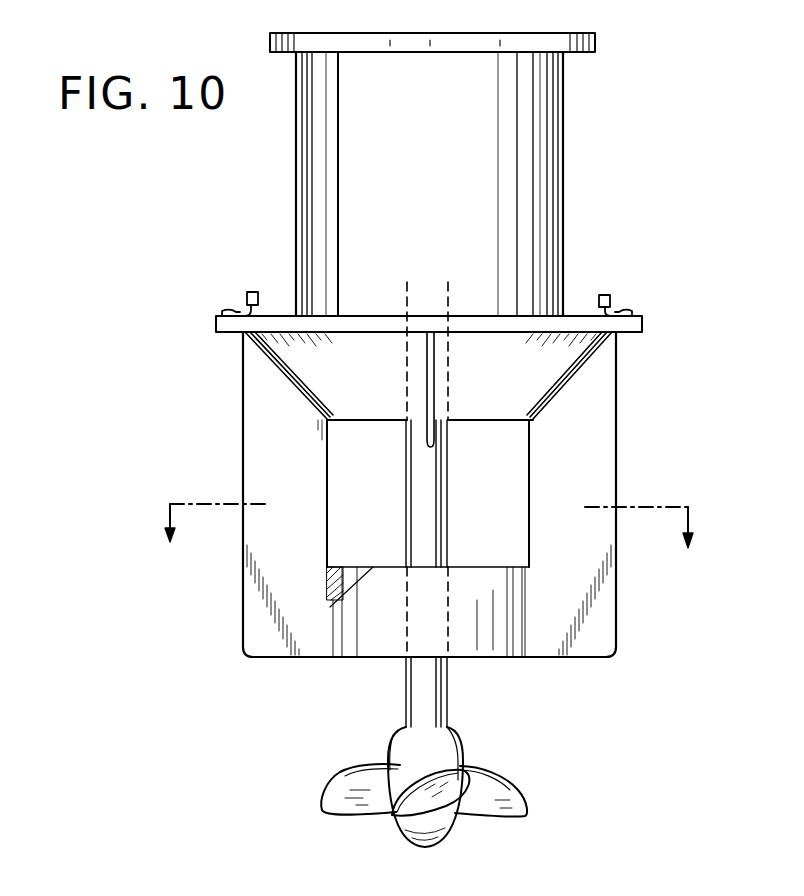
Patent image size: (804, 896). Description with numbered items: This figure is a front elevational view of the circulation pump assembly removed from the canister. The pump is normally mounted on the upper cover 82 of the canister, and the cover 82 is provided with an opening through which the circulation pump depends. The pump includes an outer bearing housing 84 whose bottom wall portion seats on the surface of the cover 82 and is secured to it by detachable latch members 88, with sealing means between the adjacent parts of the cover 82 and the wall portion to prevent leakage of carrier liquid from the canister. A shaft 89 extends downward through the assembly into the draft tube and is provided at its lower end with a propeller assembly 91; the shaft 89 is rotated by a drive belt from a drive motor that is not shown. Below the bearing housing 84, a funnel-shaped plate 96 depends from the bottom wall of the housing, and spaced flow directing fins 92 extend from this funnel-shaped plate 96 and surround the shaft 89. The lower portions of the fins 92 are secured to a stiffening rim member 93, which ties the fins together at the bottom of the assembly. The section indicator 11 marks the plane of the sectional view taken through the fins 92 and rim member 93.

The upper cover 82 is at (568, 186).
The outer bearing housing 84 is at (567, 235).
The detachable latch members 88 is at (247, 294).
The flow directing fins 92 is at (248, 632).
The funnel-shaped plate 96 is at (500, 398).
The stiffening rim member 93 is at (477, 648).
The shaft 89 is at (417, 692).
The propeller assembly 91 is at (488, 782).
The section line 11- 11 is at (434, 544).